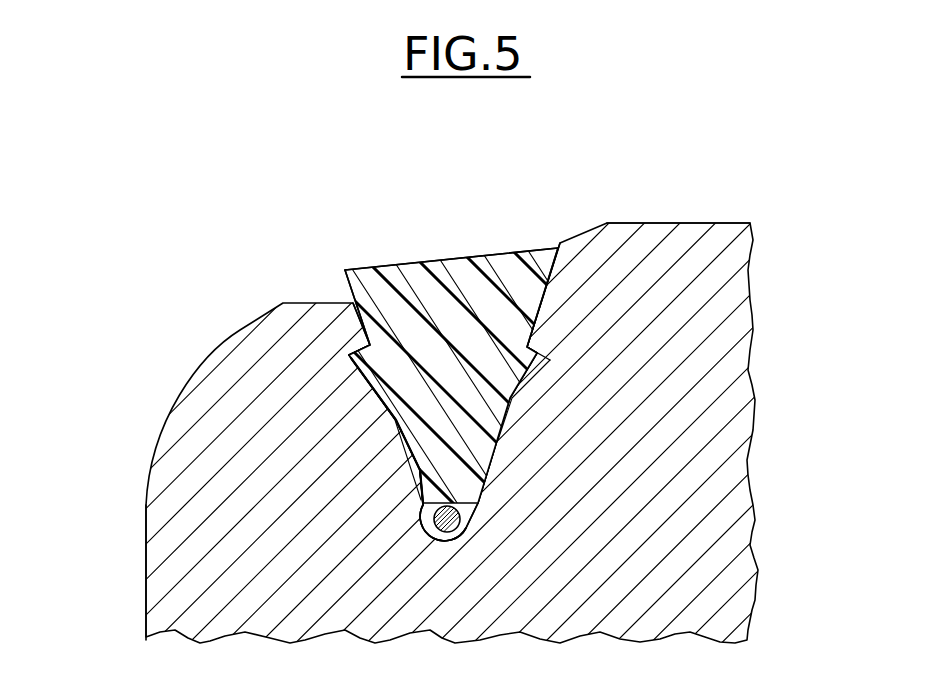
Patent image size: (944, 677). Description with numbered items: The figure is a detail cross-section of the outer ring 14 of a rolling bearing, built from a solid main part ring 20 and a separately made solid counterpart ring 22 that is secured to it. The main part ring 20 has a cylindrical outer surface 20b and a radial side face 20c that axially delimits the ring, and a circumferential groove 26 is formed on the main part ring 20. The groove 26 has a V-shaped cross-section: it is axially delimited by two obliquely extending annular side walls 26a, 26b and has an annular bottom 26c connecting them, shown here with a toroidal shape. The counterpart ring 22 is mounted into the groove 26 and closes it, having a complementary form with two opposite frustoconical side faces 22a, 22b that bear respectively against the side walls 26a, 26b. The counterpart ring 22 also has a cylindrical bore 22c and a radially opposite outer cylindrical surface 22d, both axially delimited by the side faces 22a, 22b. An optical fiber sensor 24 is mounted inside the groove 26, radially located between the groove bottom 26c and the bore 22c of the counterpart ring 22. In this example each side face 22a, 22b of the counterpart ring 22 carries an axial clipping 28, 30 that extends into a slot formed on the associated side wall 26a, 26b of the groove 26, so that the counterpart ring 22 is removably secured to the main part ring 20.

The outer ring 14 is at (472, 398).
The main part ring 20 is at (732, 286).
The cylindrical outer surface 20b is at (672, 223).
The radial side face 20c is at (146, 569).
The counterpart ring 22 is at (479, 349).
The frustoconical side face 22a is at (356, 322).
The frustoconical side face 22b is at (550, 295).
The bore 22c is at (423, 513).
The outer cylindrical surface 22d is at (498, 255).
The optical fiber sensor 24 is at (470, 507).
The circumferential groove 26 is at (467, 371).
The annular side wall 26a is at (403, 444).
The annular side wall 26b is at (508, 405).
The annular bottom 26c is at (478, 515).
The axial clipping 28 is at (355, 367).
The axial clipping 30 is at (540, 362).